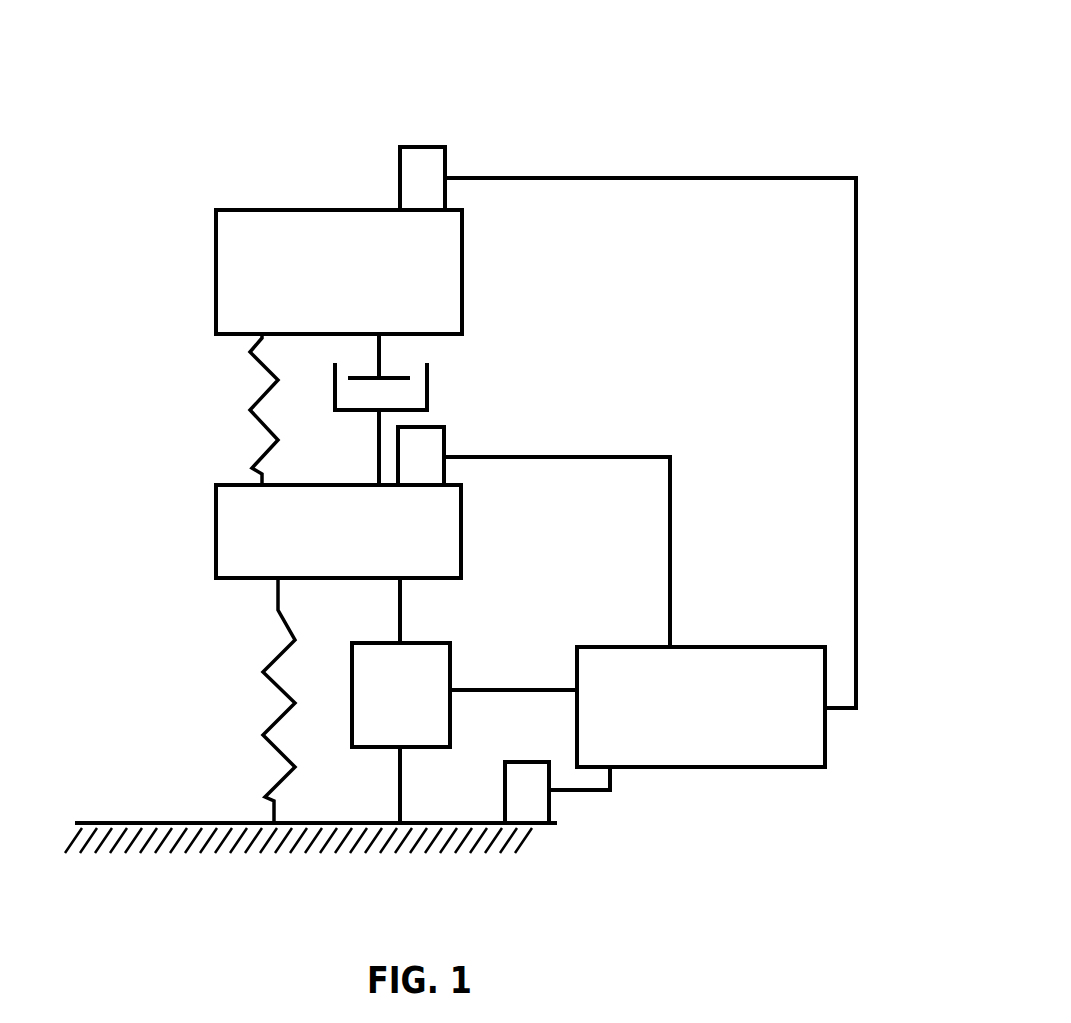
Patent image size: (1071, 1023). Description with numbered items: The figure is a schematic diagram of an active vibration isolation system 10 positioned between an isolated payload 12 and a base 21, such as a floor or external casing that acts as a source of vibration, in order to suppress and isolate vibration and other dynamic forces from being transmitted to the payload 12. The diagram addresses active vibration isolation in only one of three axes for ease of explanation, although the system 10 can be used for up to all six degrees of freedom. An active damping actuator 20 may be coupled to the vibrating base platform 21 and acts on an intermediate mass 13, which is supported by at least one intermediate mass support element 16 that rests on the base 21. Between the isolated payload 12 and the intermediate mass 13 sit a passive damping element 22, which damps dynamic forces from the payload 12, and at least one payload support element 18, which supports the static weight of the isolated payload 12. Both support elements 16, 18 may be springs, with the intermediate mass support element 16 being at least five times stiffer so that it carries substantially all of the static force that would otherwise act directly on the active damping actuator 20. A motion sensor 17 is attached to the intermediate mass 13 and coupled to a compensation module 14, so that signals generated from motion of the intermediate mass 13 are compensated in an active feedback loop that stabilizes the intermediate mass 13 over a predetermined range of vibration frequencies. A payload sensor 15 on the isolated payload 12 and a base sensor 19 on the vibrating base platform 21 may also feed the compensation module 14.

The active vibration isolation system 10 is at (630, 97).
The isolated payload 12 is at (317, 281).
The intermediate mass 13 is at (336, 543).
The compensation module 14 is at (700, 721).
The payload sensor 15 is at (407, 187).
The intermediate mass support element 16 is at (270, 685).
The motion sensor 17 is at (404, 476).
The payload support element 18 is at (260, 437).
The base sensor 19 is at (514, 802).
The active damping actuator 20 is at (385, 705).
The base 21 is at (122, 822).
The passive damping element 22 is at (357, 413).